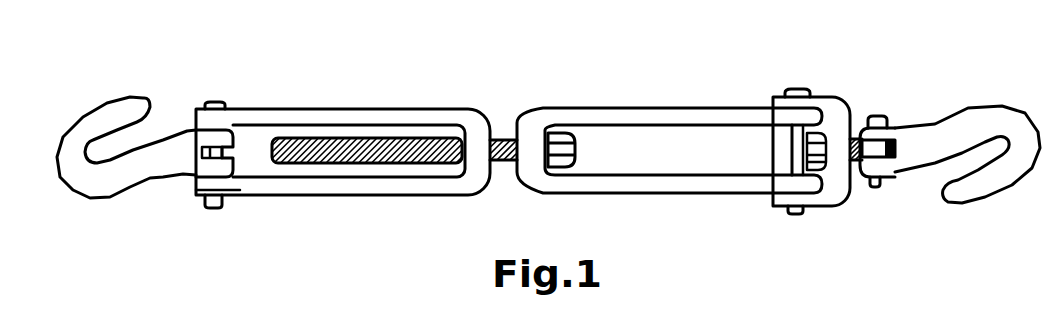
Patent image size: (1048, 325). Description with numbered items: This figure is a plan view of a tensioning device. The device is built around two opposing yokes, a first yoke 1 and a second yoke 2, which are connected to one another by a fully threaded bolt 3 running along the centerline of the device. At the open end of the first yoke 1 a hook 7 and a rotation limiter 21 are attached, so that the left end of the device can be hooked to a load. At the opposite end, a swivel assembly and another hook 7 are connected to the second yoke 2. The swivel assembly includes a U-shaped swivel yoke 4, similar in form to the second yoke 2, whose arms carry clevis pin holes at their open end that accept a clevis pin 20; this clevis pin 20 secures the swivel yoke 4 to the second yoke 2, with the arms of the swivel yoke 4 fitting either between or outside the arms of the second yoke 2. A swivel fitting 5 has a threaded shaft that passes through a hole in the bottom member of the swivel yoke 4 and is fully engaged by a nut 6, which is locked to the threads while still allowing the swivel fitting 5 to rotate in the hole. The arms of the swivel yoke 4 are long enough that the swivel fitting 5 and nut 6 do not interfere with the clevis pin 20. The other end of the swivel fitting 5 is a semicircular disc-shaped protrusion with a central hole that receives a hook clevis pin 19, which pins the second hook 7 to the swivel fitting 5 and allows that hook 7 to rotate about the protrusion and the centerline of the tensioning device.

The first yoke 1 is at (290, 108).
The second yoke 2 is at (608, 107).
The fully threaded bolt 3 is at (438, 140).
The swivel yoke 4 is at (825, 95).
The swivel fitting 5 is at (888, 128).
The nut 6 is at (800, 165).
The hook 7 is at (90, 107).
The hook clevis pin 19 is at (880, 183).
The clevis pin 20 is at (790, 90).
The rotation limiter 21 is at (235, 167).